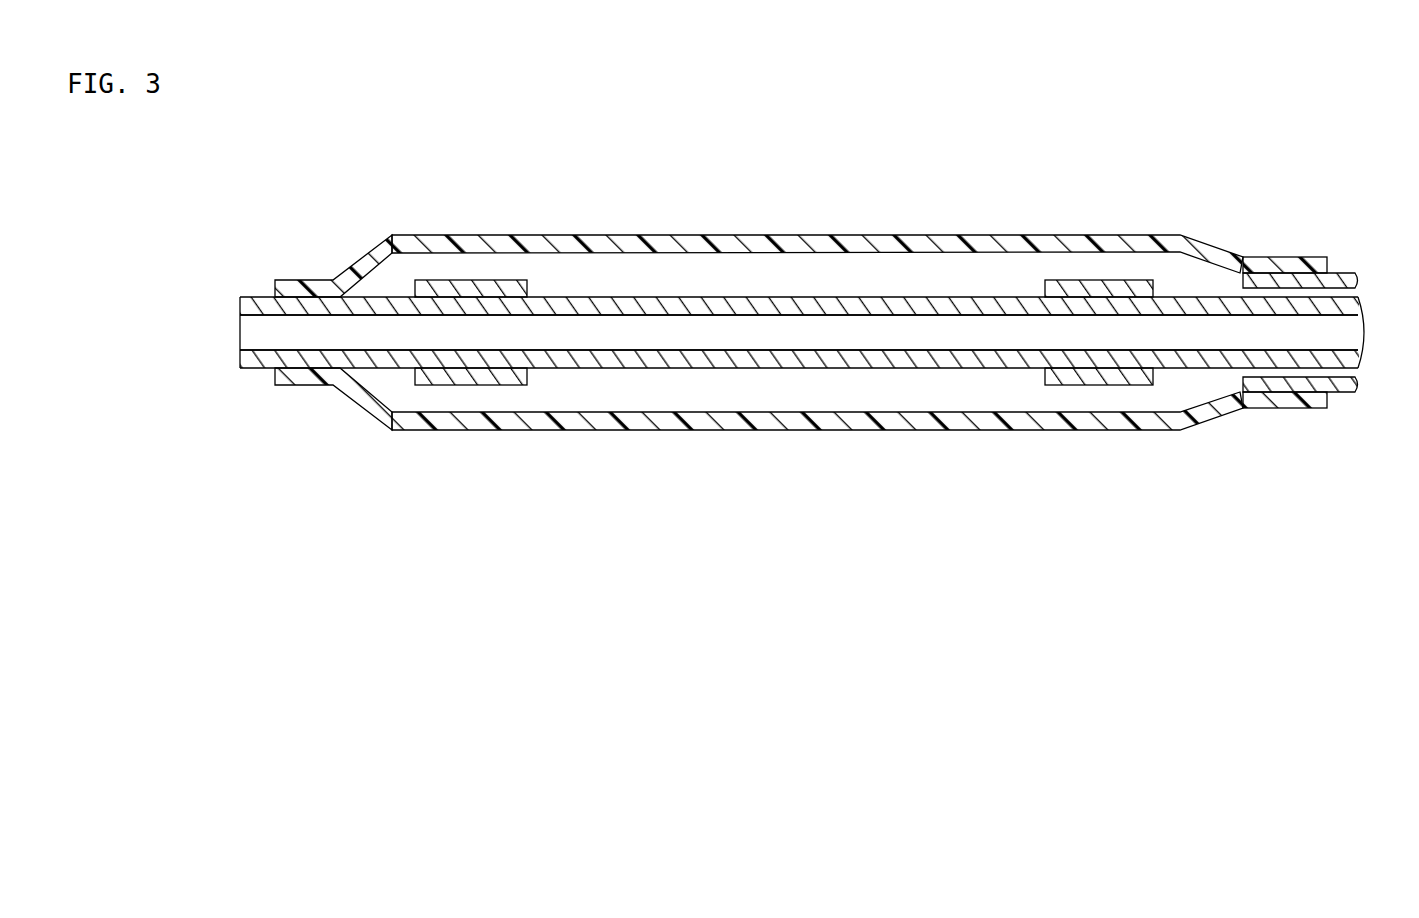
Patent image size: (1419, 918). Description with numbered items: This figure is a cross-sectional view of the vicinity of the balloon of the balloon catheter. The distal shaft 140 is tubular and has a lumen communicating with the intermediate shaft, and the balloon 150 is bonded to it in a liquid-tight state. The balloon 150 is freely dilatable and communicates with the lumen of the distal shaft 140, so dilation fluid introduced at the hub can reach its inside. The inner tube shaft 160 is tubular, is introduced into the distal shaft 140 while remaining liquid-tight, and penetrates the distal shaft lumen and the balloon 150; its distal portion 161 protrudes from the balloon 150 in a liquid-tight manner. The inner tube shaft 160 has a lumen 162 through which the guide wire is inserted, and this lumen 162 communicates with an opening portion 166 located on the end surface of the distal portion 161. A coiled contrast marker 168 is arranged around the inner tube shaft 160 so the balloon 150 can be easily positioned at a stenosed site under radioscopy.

The distal shaft 140 is at (1350, 271).
The balloon 150 is at (1093, 232).
The inner tube shaft 160 is at (1287, 257).
The distal portion 161 is at (593, 373).
The lumen 162 is at (818, 344).
The opening portion 166 is at (240, 337).
The coiled contrast marker 168 is at (478, 395).